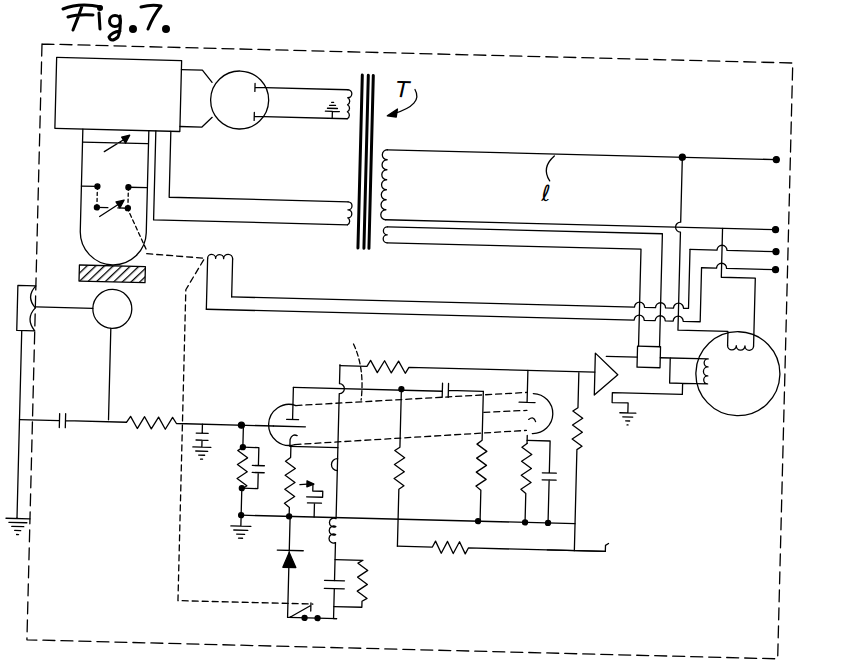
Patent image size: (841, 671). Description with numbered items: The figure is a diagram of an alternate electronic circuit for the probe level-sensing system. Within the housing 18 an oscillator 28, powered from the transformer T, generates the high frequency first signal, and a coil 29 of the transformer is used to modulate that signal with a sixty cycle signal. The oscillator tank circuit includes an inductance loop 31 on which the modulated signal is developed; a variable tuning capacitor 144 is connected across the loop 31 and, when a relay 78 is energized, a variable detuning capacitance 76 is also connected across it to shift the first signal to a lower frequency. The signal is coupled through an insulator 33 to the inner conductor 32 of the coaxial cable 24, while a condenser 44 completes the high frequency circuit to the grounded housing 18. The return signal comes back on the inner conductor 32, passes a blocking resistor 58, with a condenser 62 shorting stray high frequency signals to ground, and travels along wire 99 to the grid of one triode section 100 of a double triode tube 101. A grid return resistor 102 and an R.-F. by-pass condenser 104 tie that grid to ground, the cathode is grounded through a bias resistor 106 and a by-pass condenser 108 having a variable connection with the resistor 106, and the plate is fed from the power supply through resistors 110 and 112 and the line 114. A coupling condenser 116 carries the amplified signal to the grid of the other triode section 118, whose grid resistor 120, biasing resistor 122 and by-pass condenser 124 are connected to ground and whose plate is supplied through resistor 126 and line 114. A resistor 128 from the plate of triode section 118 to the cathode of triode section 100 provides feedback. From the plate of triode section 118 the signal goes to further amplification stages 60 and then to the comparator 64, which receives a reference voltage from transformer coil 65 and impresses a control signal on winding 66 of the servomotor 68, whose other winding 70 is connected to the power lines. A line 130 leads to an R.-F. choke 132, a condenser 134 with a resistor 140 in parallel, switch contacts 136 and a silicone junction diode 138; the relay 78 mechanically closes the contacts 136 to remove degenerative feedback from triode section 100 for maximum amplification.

The housing 18 is at (357, 43).
The coaxial cable 24 is at (28, 283).
The oscillator 28 is at (193, 59).
The coil 29 is at (341, 200).
The inductance loop 31 is at (95, 218).
The inner conductor 32 is at (72, 309).
The insulator 33 is at (152, 281).
The condenser 44 is at (78, 428).
The blocking resistor 58 is at (160, 427).
The further amplification stages 60 is at (603, 353).
The condenser 62 is at (221, 413).
The comparator 64 is at (645, 334).
The transformer coil 65 is at (400, 237).
The winding 66 is at (717, 369).
The servomotor 68 is at (755, 399).
The winding 70 is at (735, 330).
The variable capacitance 76 is at (112, 219).
The relay 78 is at (243, 253).
The wire 99 is at (244, 417).
The triode section 100 is at (293, 404).
The double triode tube 101 is at (360, 338).
The grid return resistor 102 is at (253, 466).
The R.-F. by-pass condenser 104 is at (270, 481).
The bias resistor 106 is at (302, 496).
The by-pass condenser 108 is at (340, 483).
The resistor 110 is at (414, 463).
The resistor 112 is at (453, 541).
The line 114 is at (588, 539).
The coupling condenser 116 is at (457, 379).
The triode section 118 is at (539, 388).
The resistor 120 is at (492, 449).
The biasing resistor 122 is at (534, 471).
The by-pass condenser 124 is at (566, 470).
The resistor 126 is at (590, 431).
The resistor 128 is at (381, 357).
The line 130 is at (350, 457).
The R.-F. choke 132 is at (352, 531).
The condenser 134 is at (358, 571).
The switch contacts 136 is at (303, 607).
The silicone junction diode 138 is at (290, 545).
The resistor 140 is at (383, 575).
The variable tuning capacitor 144 is at (109, 144).